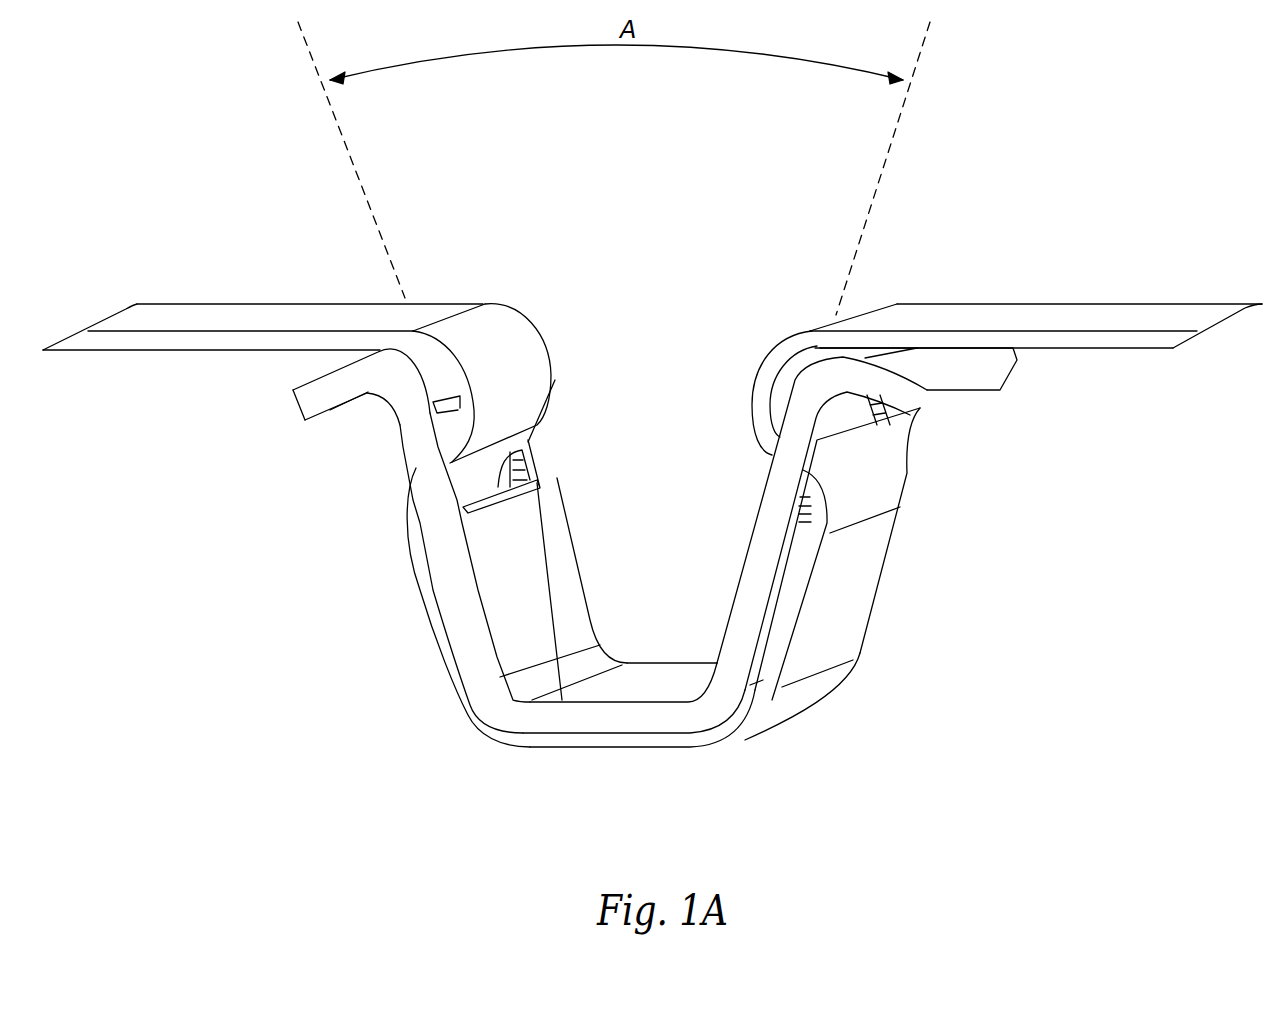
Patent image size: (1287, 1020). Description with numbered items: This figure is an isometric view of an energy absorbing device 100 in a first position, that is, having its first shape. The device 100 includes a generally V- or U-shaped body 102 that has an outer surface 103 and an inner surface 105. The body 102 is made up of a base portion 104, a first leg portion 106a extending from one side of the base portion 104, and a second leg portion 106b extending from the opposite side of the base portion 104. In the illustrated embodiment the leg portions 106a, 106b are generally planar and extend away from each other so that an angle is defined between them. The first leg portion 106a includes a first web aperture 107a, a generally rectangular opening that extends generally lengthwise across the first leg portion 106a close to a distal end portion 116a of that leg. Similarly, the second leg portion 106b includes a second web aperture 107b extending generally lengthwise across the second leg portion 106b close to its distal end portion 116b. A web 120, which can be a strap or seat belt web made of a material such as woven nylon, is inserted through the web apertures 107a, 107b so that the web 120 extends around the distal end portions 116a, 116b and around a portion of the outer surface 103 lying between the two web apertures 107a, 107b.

The energy absorbing device 100 is at (415, 465).
The body 102 is at (552, 733).
The outer surface 103 is at (773, 602).
The base portion 104 is at (626, 720).
The inner surface 105 is at (637, 687).
The first leg portion 106a is at (450, 577).
The second leg portion 106b is at (763, 557).
The first web aperture 107a is at (517, 472).
The second web aperture 107b is at (893, 423).
The distal end portion 116a is at (332, 397).
The distal end portion 116b is at (910, 397).
The web 120 is at (990, 320).